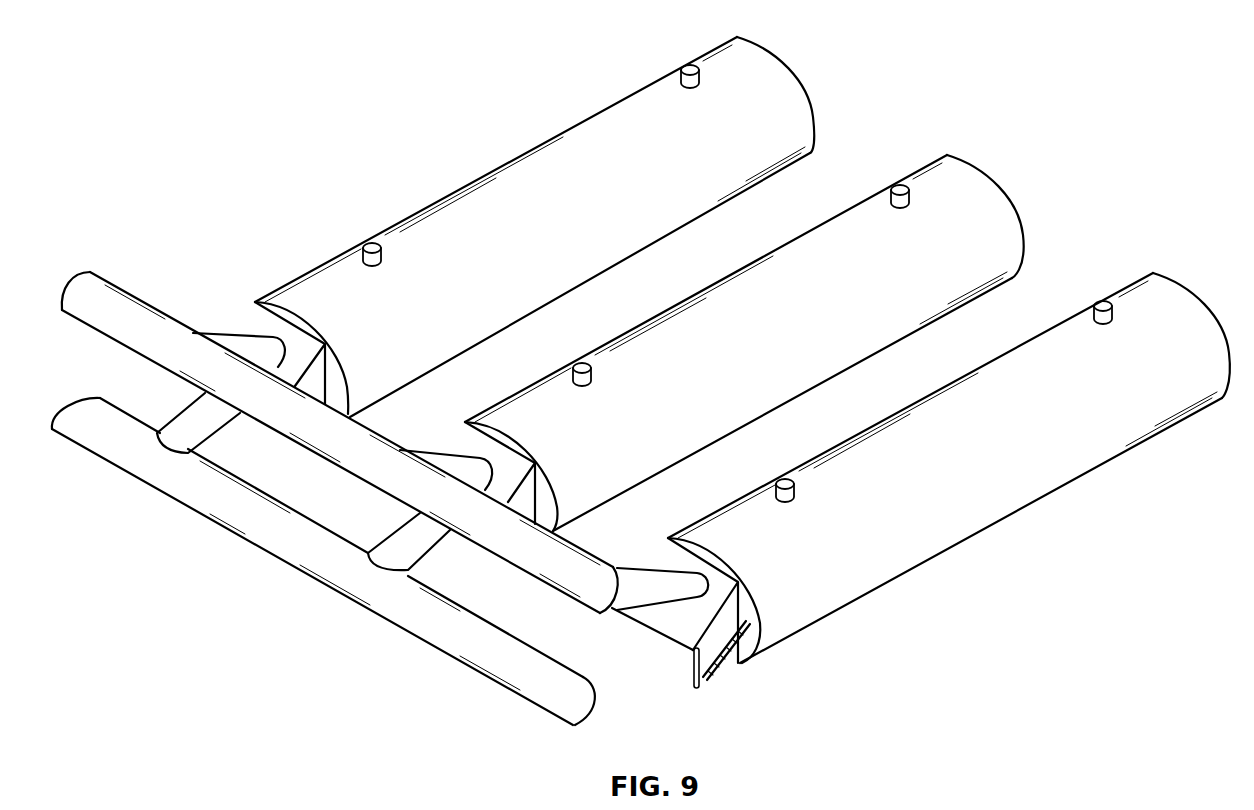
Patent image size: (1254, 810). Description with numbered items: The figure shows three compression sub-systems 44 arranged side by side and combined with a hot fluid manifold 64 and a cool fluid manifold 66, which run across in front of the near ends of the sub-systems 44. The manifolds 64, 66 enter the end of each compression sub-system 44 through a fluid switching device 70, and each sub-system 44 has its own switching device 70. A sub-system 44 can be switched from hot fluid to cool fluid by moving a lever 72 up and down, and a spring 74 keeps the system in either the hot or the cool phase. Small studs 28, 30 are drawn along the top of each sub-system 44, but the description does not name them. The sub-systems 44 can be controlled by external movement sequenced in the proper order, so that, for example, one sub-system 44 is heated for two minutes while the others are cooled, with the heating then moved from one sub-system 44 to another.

The mounting stud 28 is at (777, 481).
The mounting stud 30 is at (1095, 302).
The compression sub-system 44 is at (742, 350).
The hot fluid manifold 64 is at (340, 442).
The cool fluid manifold 66 is at (323, 561).
The fluid switching device 70 is at (657, 555).
The lever 72 is at (697, 690).
The spring 74 is at (708, 668).